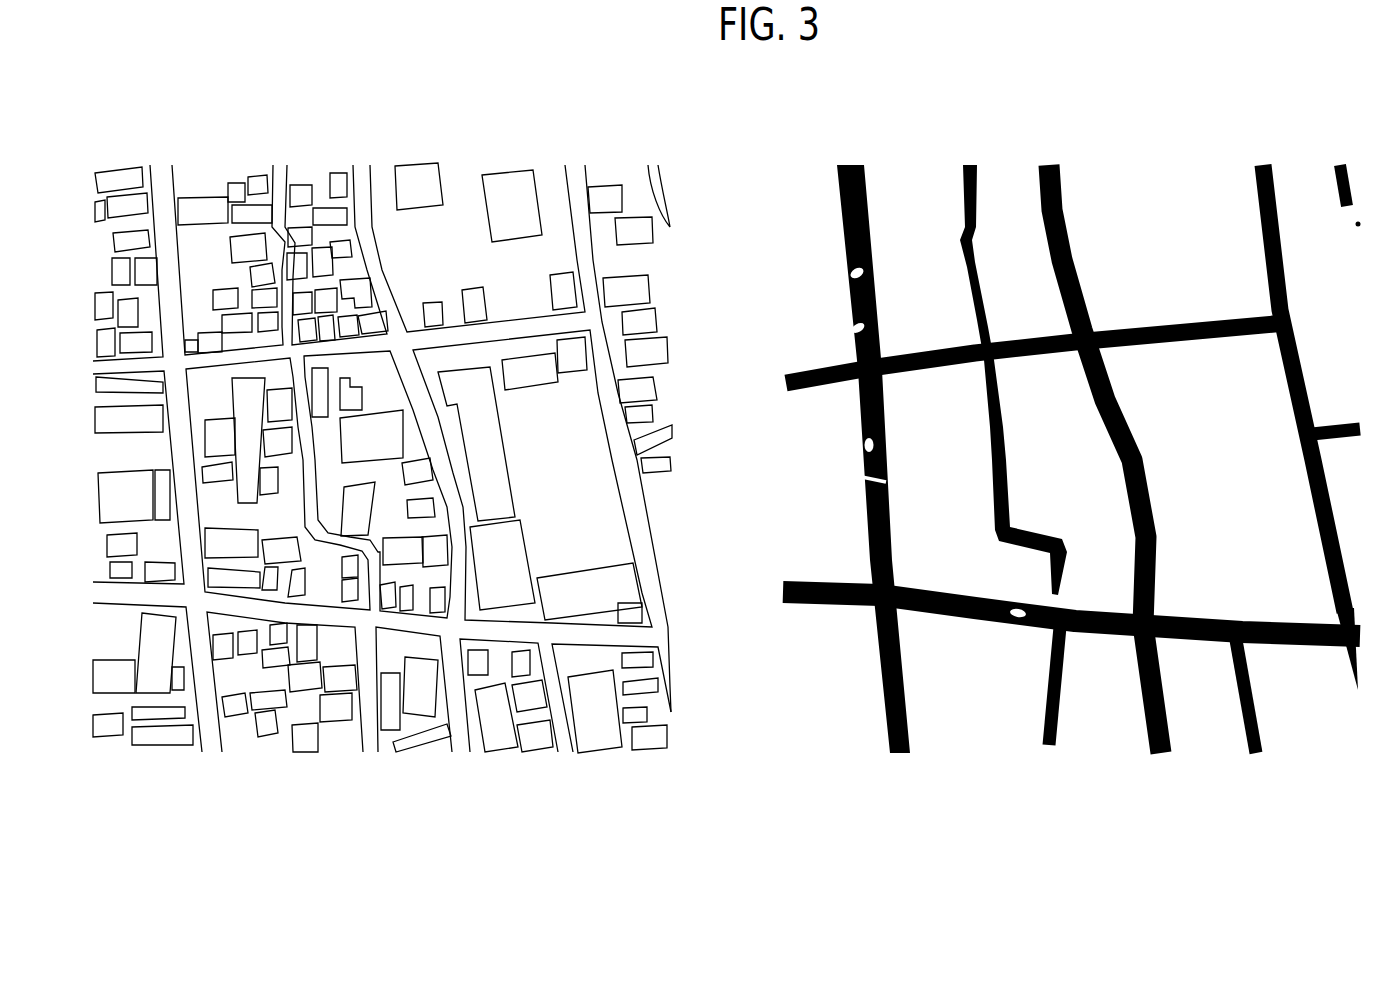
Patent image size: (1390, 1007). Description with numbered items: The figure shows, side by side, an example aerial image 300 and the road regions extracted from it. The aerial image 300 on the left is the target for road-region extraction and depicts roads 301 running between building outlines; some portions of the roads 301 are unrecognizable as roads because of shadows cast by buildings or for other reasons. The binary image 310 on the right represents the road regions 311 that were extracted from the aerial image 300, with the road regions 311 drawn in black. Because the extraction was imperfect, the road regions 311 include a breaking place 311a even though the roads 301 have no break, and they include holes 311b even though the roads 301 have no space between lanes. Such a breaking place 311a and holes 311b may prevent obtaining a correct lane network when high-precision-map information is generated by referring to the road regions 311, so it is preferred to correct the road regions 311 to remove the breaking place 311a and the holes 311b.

The aerial image 300 is at (382, 528).
The roads 301 is at (225, 743).
The binary image 310 is at (1072, 531).
The road regions 311 is at (900, 753).
The breaking place 311a is at (882, 478).
The holes 311b is at (864, 330).